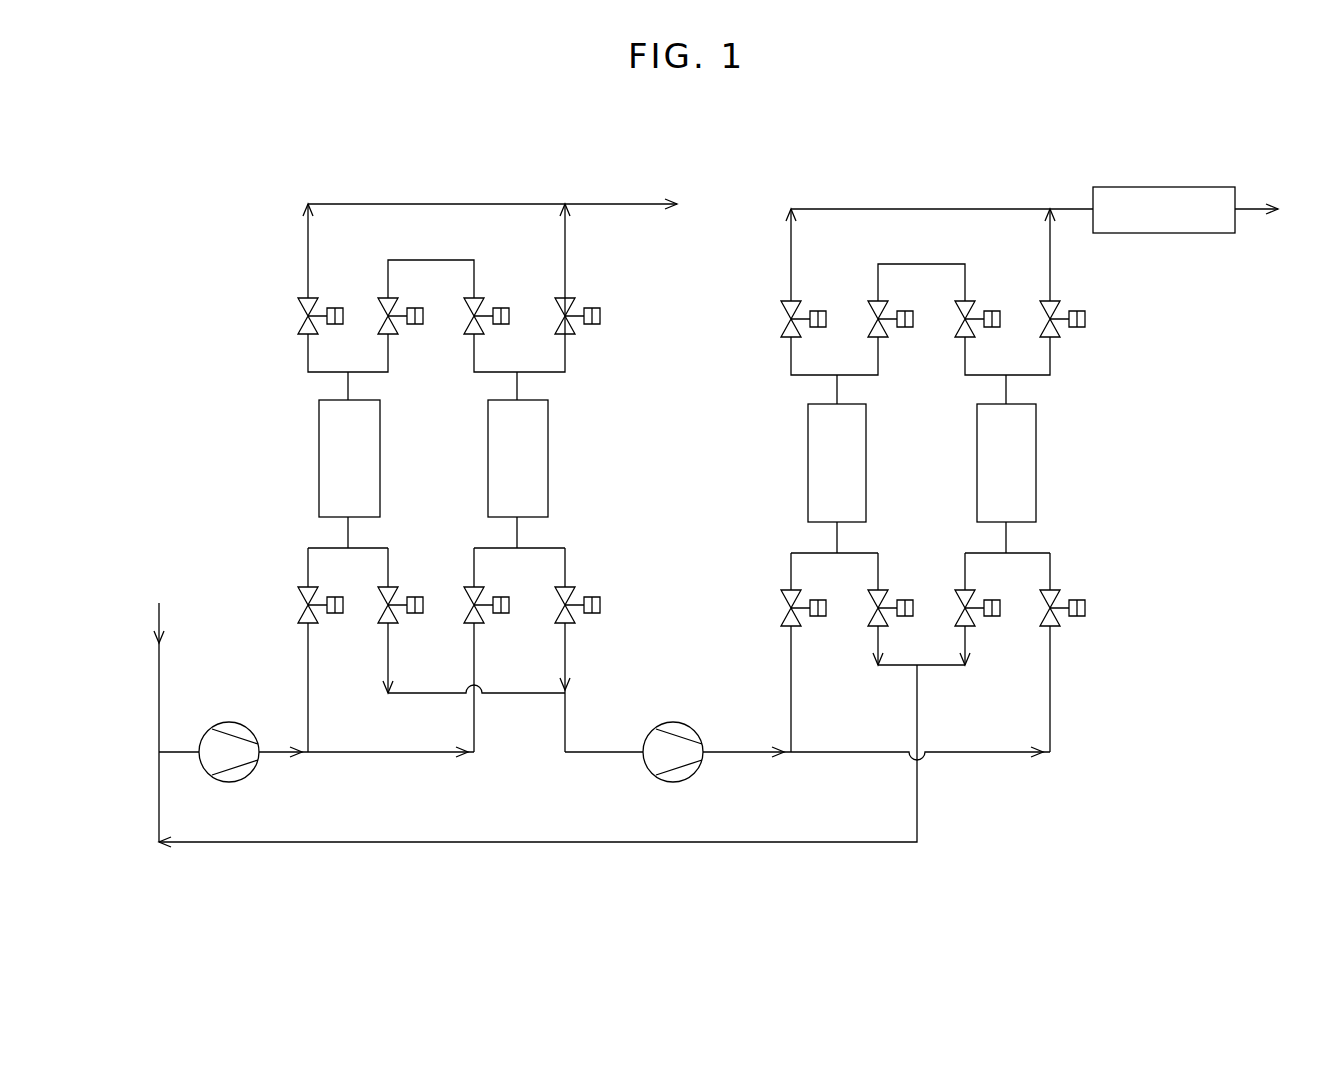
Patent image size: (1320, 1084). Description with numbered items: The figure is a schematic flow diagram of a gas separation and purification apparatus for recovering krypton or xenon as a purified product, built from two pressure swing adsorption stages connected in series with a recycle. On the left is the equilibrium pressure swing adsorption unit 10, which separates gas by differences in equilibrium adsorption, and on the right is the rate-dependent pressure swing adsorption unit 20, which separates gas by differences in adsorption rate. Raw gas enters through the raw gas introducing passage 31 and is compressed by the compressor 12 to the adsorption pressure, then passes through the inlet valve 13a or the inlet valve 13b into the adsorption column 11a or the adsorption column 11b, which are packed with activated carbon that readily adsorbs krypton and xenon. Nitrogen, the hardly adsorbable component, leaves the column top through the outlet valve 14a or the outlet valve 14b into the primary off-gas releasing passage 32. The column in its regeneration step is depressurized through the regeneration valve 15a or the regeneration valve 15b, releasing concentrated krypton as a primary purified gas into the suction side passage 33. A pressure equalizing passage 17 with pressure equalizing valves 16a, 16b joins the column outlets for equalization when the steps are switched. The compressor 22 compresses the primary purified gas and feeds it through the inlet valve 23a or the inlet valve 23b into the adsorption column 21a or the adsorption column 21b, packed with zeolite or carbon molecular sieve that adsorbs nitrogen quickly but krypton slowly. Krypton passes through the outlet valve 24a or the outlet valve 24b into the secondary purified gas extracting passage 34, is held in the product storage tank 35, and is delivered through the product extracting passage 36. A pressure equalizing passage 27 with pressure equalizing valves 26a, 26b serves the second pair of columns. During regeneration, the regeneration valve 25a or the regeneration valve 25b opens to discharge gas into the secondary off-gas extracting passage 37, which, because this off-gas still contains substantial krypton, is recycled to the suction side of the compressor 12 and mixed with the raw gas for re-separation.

The equilibrium pressure swing adsorption unit 10 is at (251, 229).
The adsorption column 11a is at (319, 450).
The adsorption column 11b is at (548, 452).
The compressor 12 is at (238, 722).
The inlet valve 13a is at (298, 612).
The inlet valve 13b is at (480, 622).
The outlet valve 14a is at (298, 320).
The outlet valve 14b is at (573, 308).
The regeneration valve 15a is at (394, 582).
The regeneration valve 15b is at (573, 595).
The pressure equalizing valve 16a is at (380, 305).
The pressure equalizing valve 16b is at (484, 306).
The pressure equalizing passage 17 is at (427, 260).
The rate-dependent pressure swing adsorption unit 20 is at (1113, 546).
The adsorption column 21a is at (808, 451).
The adsorption column 21b is at (1036, 454).
The compressor 22 is at (685, 724).
The inlet valve 23a is at (782, 606).
The inlet valve 23b is at (1058, 618).
The outlet valve 24a is at (782, 320).
The outlet valve 24b is at (1058, 313).
The regeneration valve 25a is at (868, 618).
The regeneration valve 25b is at (955, 602).
The pressure equalizing valve 26a is at (870, 310).
The pressure equalizing valve 26b is at (972, 312).
The pressure equalizing passage 27 is at (916, 264).
The raw gas introducing passage 31 is at (160, 622).
The primary off-gas releasing passage 32 is at (616, 204).
The suction side passage 33 is at (608, 753).
The secondary purified gas extracting passage 34 is at (1077, 208).
The product storage tank 35 is at (1180, 187).
The product extracting passage 36 is at (1248, 208).
The secondary off-gas extracting passage 37 is at (917, 822).